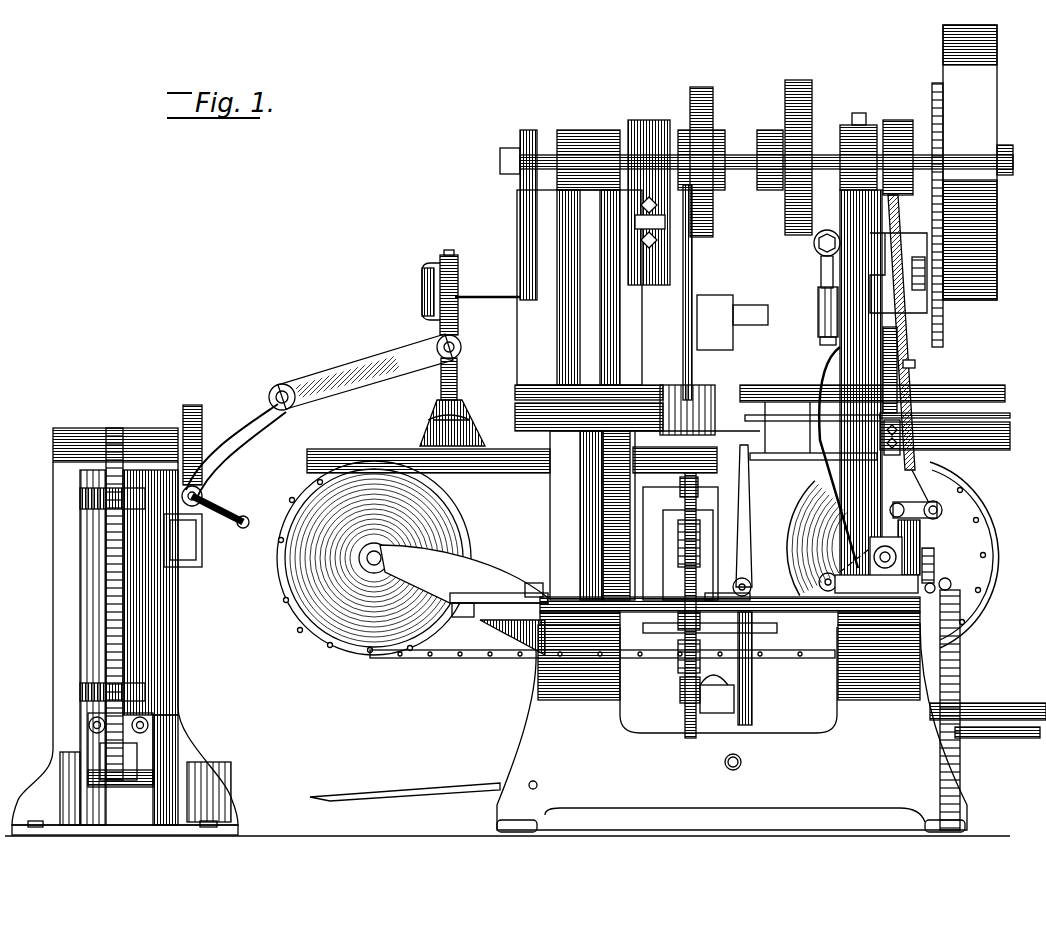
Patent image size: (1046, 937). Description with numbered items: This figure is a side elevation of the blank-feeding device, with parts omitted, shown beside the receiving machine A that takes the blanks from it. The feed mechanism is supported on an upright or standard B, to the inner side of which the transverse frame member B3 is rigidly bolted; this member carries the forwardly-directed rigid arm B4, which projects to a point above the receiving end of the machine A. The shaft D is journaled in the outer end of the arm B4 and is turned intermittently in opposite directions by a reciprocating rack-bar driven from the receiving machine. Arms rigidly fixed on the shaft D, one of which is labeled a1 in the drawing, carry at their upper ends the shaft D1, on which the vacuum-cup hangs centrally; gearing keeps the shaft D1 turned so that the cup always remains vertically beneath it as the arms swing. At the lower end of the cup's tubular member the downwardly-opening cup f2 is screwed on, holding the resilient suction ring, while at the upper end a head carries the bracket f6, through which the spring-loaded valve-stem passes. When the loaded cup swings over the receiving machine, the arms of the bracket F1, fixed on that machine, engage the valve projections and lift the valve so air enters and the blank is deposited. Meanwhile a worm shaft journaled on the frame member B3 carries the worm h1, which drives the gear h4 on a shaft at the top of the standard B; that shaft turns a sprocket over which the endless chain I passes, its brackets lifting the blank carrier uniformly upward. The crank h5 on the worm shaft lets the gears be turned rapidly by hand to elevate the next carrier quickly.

The receiving machine A is at (883, 365).
The upright or standard B is at (200, 742).
The transverse frame member B3 is at (204, 548).
The rigid arm B4 is at (244, 432).
The shaft D is at (282, 384).
The shaft D1 is at (462, 347).
The connecting link a1 is at (355, 372).
The bracket F1 is at (466, 418).
The cup f2 is at (432, 420).
The bracket f6 is at (422, 290).
The worm h1 is at (212, 486).
The gear h4 is at (203, 425).
The crank h5 is at (247, 518).
The endless chain I is at (110, 430).